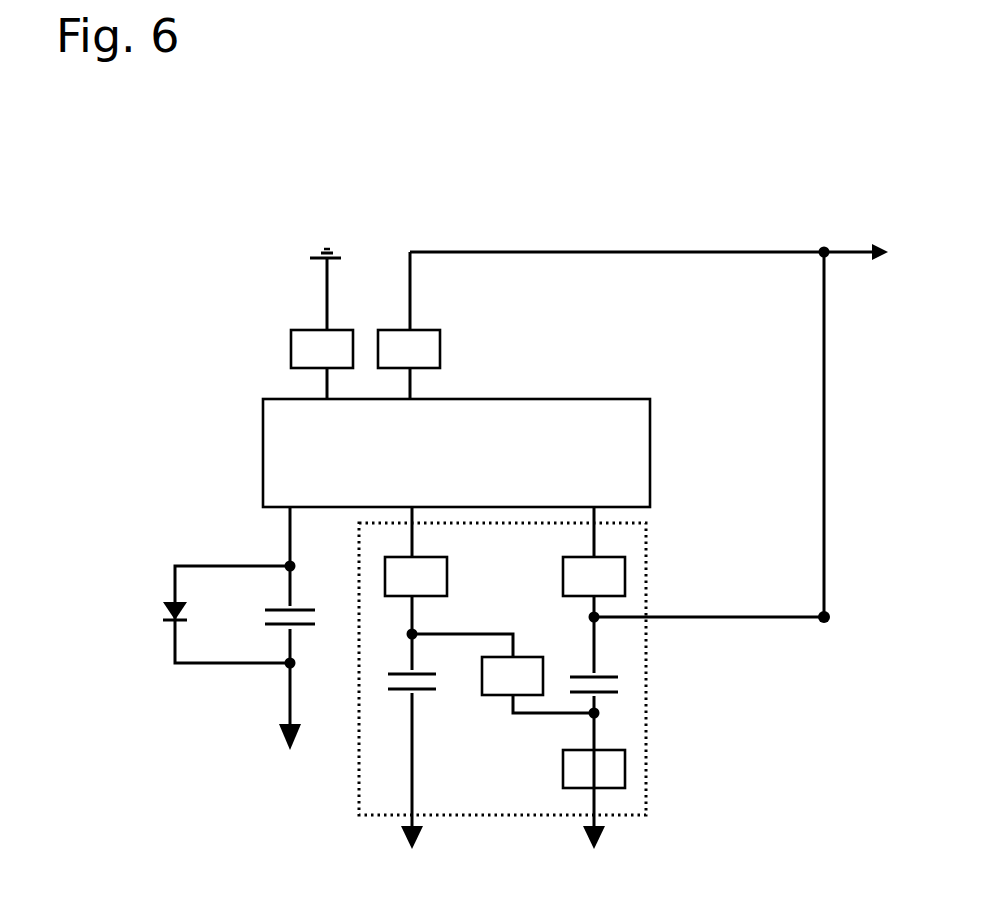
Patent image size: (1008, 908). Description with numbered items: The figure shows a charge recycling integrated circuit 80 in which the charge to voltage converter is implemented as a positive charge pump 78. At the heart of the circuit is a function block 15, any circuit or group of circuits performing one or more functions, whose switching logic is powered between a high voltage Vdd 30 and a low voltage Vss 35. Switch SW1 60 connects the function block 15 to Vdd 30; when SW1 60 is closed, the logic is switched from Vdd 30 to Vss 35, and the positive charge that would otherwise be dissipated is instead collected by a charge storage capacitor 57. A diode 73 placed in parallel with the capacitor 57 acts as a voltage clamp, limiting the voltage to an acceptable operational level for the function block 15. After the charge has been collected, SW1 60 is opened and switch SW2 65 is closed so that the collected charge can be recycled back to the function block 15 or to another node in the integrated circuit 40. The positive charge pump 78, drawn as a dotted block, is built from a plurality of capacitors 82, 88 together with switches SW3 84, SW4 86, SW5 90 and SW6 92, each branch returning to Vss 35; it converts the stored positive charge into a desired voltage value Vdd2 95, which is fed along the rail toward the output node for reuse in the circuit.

The charge recycling integrated circuit 80 is at (812, 172).
The another node in the integrated circuit 40 is at (860, 250).
The high voltage Vdd 30 is at (316, 258).
The switch SW1 60 is at (291, 340).
The switch SW2 65 is at (440, 345).
The function block 15 is at (263, 474).
The diode 73 is at (172, 616).
The charge storage capacitor 57 is at (292, 610).
The positive charge pump 78 is at (648, 605).
The switch SW3 84 is at (447, 578).
The capacitor 82 is at (403, 692).
The switch SW4 86 is at (543, 670).
The switch SW5 90 is at (622, 545).
The voltage Vdd2 95 is at (827, 613).
The capacitor 88 is at (616, 692).
The switch SW6 92 is at (625, 770).
The low voltage Vss 35 is at (286, 740).